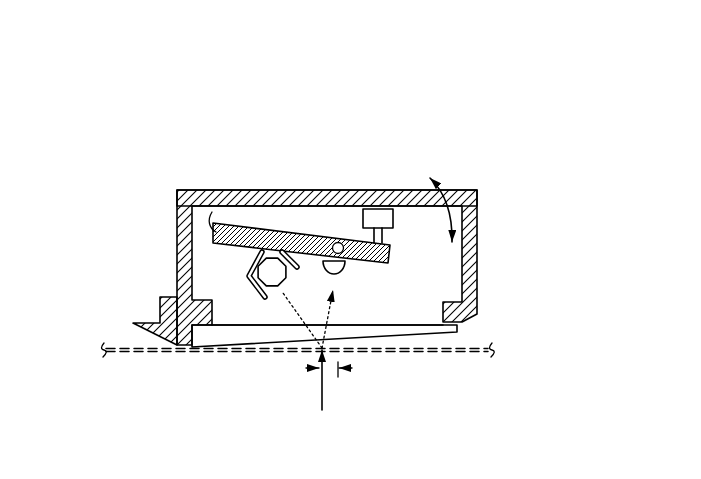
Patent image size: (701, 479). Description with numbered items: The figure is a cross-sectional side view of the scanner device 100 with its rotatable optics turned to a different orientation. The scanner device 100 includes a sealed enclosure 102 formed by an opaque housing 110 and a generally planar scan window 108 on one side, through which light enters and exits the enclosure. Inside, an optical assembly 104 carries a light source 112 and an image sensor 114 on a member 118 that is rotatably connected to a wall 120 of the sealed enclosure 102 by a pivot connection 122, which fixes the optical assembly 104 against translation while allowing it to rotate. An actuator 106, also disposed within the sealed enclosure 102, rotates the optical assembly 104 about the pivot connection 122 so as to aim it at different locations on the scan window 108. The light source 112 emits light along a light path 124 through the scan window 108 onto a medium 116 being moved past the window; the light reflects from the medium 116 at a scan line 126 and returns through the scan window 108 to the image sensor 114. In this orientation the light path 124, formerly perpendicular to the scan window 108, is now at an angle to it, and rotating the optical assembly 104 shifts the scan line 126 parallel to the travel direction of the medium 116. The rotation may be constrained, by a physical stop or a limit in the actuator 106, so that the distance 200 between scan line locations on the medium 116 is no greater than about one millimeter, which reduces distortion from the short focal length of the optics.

The scanner device 100 is at (164, 100).
The sealed enclosure 102 is at (152, 223).
The optical assembly 104 is at (402, 272).
The actuator 106 is at (388, 206).
The scan window 108 is at (223, 338).
The housing 110 is at (230, 190).
The light source 112 is at (282, 318).
The image sensor 114 is at (363, 286).
The medium 116 is at (133, 346).
The member 118 is at (272, 232).
The wall 120 is at (212, 224).
The pivot connection 122 is at (339, 243).
The light path 124 is at (347, 304).
The scan line 126 is at (302, 381).
The distance 200 is at (344, 382).